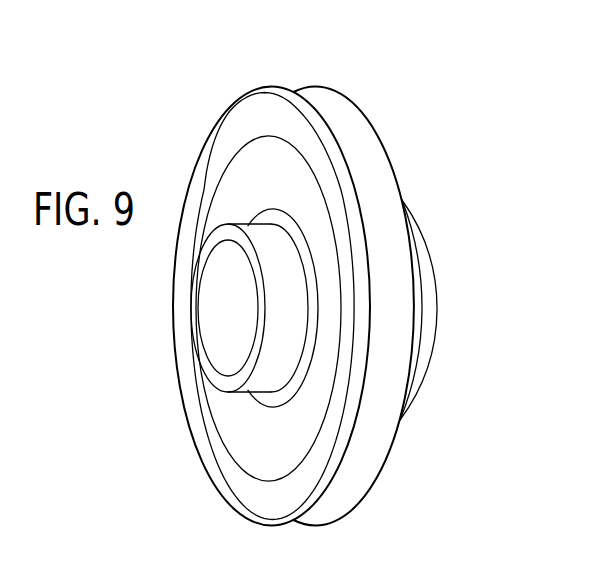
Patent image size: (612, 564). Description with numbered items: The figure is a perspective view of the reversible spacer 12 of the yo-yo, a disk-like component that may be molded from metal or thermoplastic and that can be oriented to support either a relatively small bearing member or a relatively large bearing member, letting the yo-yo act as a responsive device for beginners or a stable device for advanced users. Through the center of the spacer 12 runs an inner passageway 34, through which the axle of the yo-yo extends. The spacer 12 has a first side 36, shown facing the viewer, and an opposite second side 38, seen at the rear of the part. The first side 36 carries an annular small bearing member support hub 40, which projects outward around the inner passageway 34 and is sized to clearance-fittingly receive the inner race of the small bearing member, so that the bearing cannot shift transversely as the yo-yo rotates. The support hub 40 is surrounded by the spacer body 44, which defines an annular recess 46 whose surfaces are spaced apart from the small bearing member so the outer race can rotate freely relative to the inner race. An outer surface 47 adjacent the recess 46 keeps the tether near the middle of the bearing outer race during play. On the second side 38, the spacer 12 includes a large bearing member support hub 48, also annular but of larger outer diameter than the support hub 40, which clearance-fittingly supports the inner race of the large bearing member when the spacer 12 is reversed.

The reversible spacer 12 is at (468, 128).
The inner passageway 34 is at (214, 327).
The first side 36 is at (175, 158).
The second side 38 is at (438, 201).
The small bearing member support hub 40 is at (215, 392).
The spacer body 44 is at (298, 89).
The annular recess 46 is at (272, 443).
The outer surface 47 is at (244, 128).
The large bearing member support hub 48 is at (439, 311).